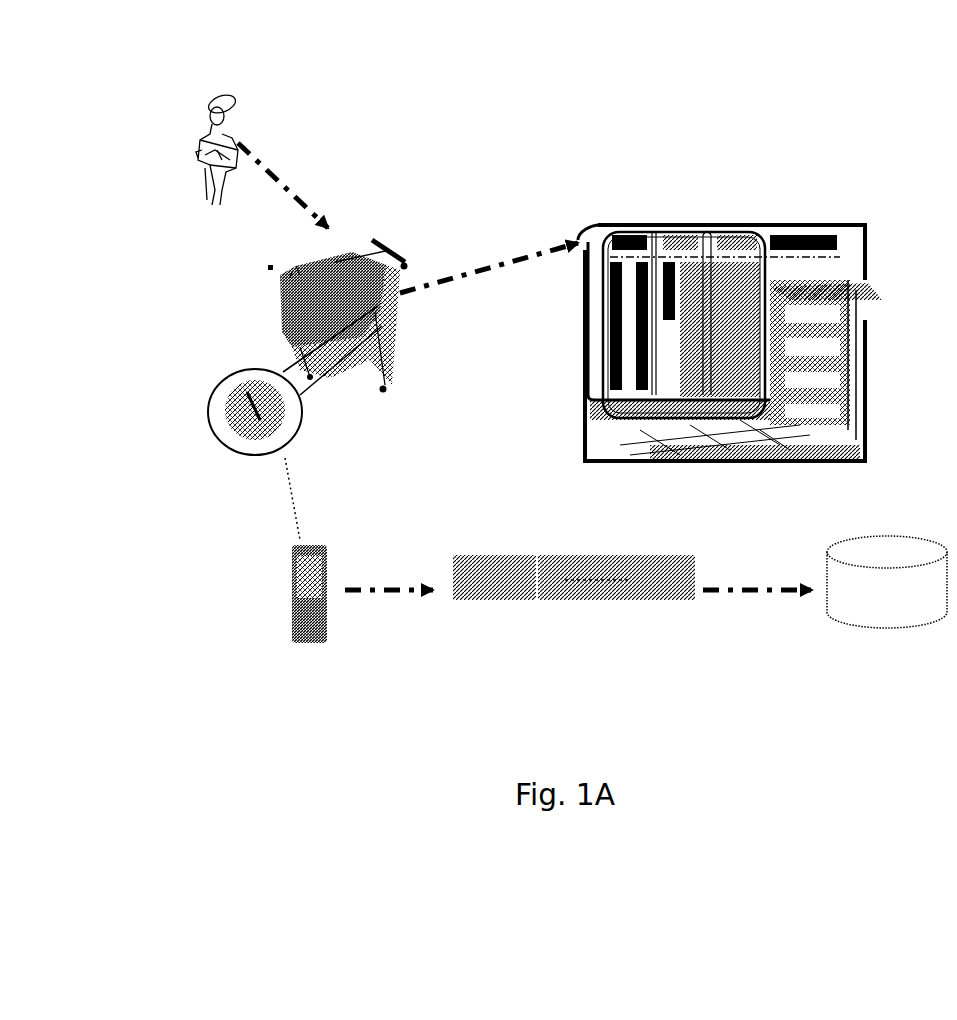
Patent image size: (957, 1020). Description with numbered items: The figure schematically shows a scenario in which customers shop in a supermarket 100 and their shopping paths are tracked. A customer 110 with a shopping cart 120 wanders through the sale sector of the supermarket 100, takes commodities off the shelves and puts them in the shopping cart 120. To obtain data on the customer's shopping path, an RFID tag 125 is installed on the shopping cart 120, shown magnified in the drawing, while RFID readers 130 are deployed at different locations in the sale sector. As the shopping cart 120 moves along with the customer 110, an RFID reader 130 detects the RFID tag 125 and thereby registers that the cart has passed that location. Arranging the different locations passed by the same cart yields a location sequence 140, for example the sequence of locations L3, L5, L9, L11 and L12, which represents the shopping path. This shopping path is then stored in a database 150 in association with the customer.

The supermarket 100 is at (730, 327).
The customer 110 is at (246, 148).
The shopping cart 120 is at (303, 316).
The RFID tag 125 is at (277, 423).
The RFID reader 130 is at (265, 594).
The location sequence 140 is at (580, 620).
The database 150 is at (887, 611).